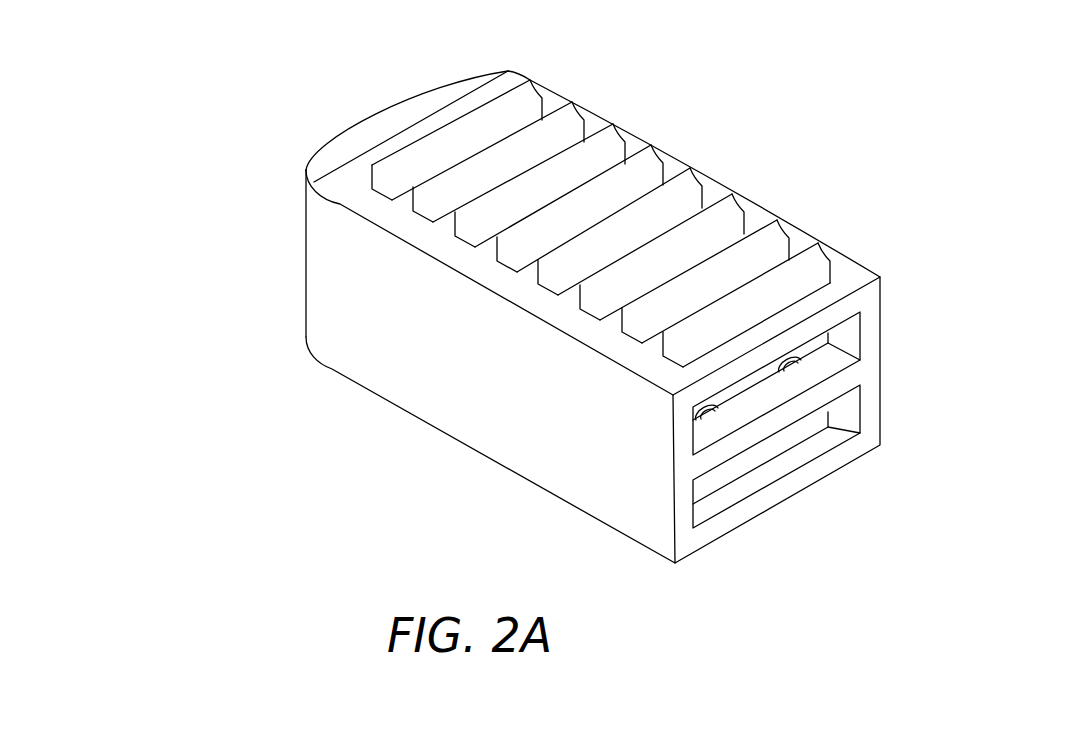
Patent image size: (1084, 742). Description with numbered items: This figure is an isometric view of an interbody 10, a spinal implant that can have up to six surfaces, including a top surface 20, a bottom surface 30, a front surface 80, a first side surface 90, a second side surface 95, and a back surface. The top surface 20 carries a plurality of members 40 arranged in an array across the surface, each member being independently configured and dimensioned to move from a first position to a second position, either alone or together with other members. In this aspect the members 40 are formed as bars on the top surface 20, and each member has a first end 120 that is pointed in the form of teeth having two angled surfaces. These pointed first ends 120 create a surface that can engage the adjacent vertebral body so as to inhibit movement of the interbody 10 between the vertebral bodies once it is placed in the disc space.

The interbody 10 is at (81, 71).
The top surface 20 is at (545, 93).
The bottom surface 30 is at (360, 385).
The plurality of members 40 is at (565, 110).
The front surface 80 is at (371, 131).
The first side surface 90 is at (884, 375).
The second side surface 95 is at (375, 336).
The first end 120 is at (813, 253).